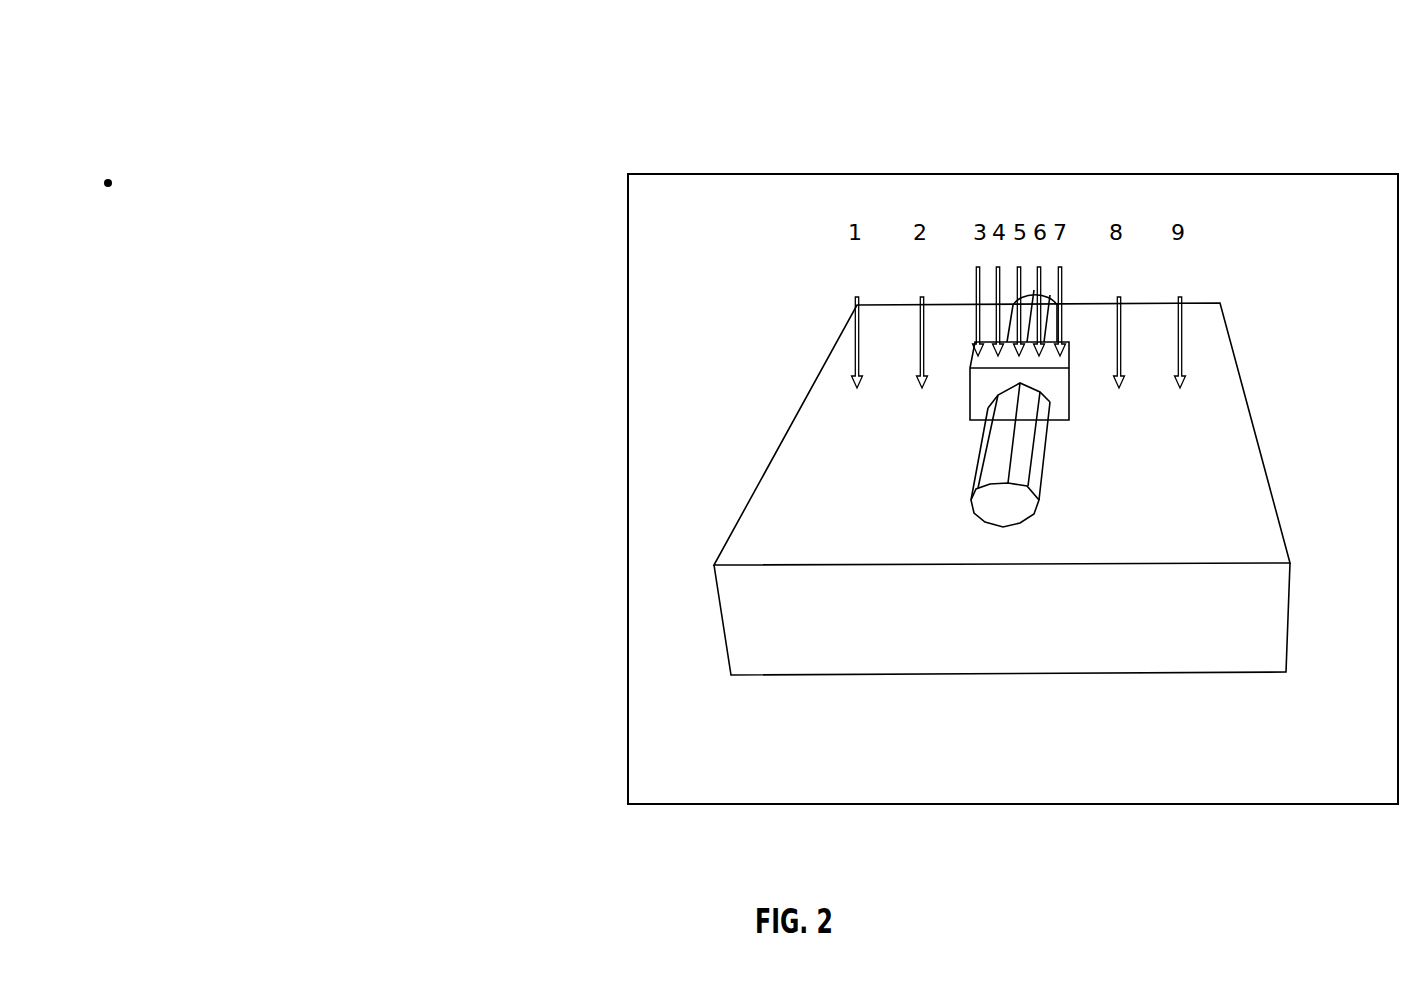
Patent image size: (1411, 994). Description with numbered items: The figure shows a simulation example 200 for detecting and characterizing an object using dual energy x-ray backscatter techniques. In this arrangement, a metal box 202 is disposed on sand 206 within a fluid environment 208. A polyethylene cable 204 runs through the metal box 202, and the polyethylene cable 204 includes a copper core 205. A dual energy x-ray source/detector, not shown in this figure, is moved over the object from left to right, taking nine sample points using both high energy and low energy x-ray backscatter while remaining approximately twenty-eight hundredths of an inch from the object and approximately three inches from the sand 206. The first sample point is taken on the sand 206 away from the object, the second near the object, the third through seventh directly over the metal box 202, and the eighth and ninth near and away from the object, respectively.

The simulation example 200 is at (393, 84).
The metal box 202 is at (1070, 397).
The polyethylene cable 204 is at (1050, 452).
The copper core 205 is at (1018, 513).
The sand 206 is at (797, 461).
The fluid environment 208 is at (1013, 489).